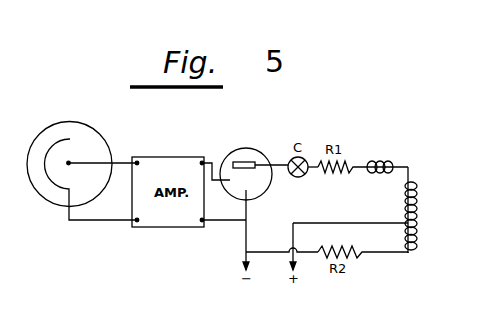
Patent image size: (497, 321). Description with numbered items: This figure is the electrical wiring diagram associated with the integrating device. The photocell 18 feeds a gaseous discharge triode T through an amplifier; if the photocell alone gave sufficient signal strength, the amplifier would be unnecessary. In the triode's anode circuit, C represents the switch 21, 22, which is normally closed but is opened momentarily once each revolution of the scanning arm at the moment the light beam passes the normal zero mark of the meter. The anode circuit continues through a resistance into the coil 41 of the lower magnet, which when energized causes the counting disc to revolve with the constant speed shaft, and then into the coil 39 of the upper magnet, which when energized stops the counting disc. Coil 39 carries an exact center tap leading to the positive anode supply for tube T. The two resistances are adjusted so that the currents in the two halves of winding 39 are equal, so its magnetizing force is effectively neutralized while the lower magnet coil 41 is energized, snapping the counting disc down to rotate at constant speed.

The photocell 18 is at (82, 161).
The switch 21 is at (262, 197).
The switch 22 is at (262, 197).
The coil of the upper magnet 39 is at (394, 209).
The coil of the lower magnet 41 is at (394, 162).